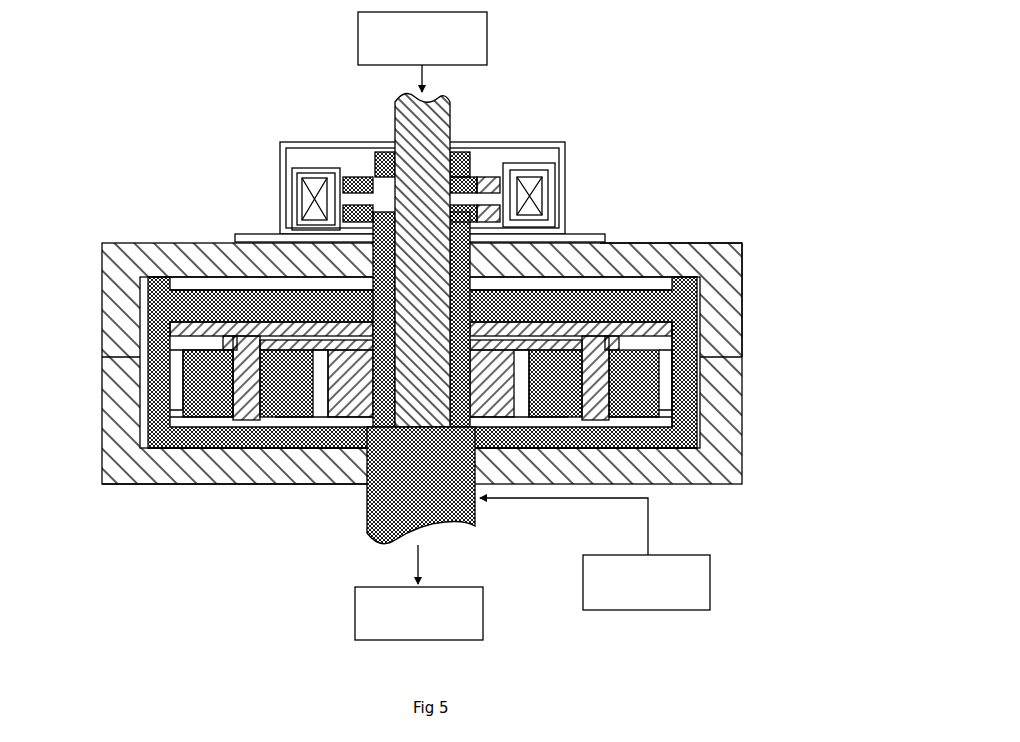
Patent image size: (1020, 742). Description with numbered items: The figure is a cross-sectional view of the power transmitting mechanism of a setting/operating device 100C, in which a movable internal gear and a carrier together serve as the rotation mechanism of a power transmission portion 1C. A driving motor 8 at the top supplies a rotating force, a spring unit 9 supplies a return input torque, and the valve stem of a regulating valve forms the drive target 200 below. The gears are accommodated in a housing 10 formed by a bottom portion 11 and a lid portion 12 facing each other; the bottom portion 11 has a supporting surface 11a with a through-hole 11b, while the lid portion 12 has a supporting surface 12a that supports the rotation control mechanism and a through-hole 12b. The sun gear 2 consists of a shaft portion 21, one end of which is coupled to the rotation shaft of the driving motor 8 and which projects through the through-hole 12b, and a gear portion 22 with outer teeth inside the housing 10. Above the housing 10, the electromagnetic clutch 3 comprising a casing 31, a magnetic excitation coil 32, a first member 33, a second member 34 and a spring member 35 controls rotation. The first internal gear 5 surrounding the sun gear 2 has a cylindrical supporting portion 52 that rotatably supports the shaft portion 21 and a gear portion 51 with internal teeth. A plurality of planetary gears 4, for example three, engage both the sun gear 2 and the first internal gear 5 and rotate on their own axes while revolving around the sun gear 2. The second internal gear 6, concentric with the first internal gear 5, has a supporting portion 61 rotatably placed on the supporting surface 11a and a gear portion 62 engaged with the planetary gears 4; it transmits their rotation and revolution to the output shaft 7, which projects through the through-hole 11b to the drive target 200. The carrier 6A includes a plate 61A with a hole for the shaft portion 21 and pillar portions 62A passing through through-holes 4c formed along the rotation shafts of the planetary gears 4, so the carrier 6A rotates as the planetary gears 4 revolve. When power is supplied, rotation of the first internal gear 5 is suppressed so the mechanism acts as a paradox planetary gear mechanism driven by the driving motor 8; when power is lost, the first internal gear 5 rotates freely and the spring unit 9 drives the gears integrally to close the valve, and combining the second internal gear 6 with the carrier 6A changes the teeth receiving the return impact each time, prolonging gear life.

The setting/operating device 100C is at (865, 56).
The power transmission portion 1C is at (726, 112).
The driving motor 8 is at (487, 40).
The spring unit 9 is at (710, 583).
The drive target 200 is at (355, 610).
The sun gear 2 is at (695, 182).
The shaft portion 21 is at (605, 236).
The gear portion 22 is at (656, 242).
The electromagnetic clutch 3 is at (573, 142).
The casing 31 is at (280, 152).
The magnetic excitation coil 32 is at (527, 170).
The first member 33 is at (483, 173).
The second member 34 is at (300, 207).
The spring member 35 is at (374, 158).
The planetary gear 4 is at (140, 398).
The through-hole 4c is at (140, 412).
The first internal gear 5 is at (44, 262).
The gear portion 51 is at (140, 320).
The cylindrical supporting portion 52 is at (140, 266).
The second internal gear 6 is at (796, 410).
The supporting portion 61 is at (680, 448).
The gear portion 62 is at (684, 422).
The carrier 6A is at (38, 335).
The plate 61A is at (140, 345).
The pillar portion 62A is at (140, 372).
The output shaft 7 is at (365, 505).
The housing 10 is at (796, 340).
The bottom portion 11 is at (738, 375).
The supporting surface 11a is at (117, 484).
The through-hole 11b is at (365, 490).
The lid portion 12 is at (736, 348).
The supporting surface 12a is at (727, 243).
The through-hole 12b is at (566, 213).